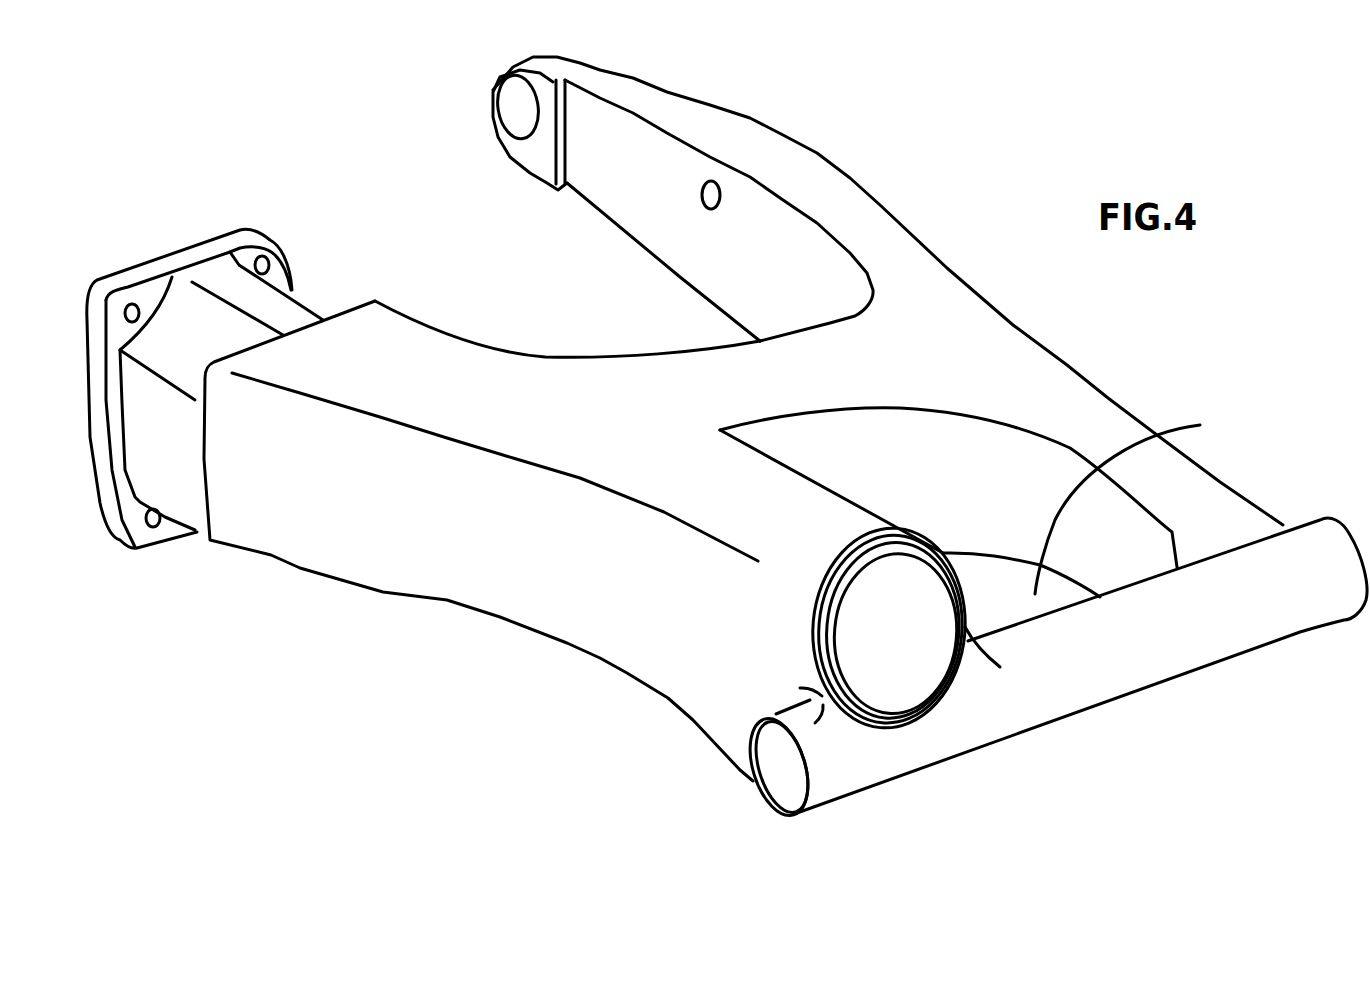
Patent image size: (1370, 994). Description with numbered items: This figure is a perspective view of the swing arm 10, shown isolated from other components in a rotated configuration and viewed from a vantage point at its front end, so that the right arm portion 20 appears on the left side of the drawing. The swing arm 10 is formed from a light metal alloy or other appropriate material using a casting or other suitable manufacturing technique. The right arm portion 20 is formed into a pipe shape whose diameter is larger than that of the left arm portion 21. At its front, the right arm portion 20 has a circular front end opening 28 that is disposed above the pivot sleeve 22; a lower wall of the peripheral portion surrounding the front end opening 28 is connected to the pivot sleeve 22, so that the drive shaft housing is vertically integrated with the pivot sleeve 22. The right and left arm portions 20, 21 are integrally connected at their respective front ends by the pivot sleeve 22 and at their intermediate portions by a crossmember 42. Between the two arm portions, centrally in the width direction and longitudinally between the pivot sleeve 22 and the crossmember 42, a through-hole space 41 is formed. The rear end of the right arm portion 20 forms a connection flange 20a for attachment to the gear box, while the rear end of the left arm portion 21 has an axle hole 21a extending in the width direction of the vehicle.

The swing arm 10 is at (860, 175).
The right arm portion 20 is at (447, 588).
The connection flange 20a is at (168, 248).
The left arm portion 21 is at (1064, 374).
The axle hole 21a is at (513, 105).
The pivot sleeve 22 is at (1122, 672).
The front end opening 28 is at (882, 727).
The through-hole space 41 is at (1200, 425).
The crossmember 42 is at (703, 377).